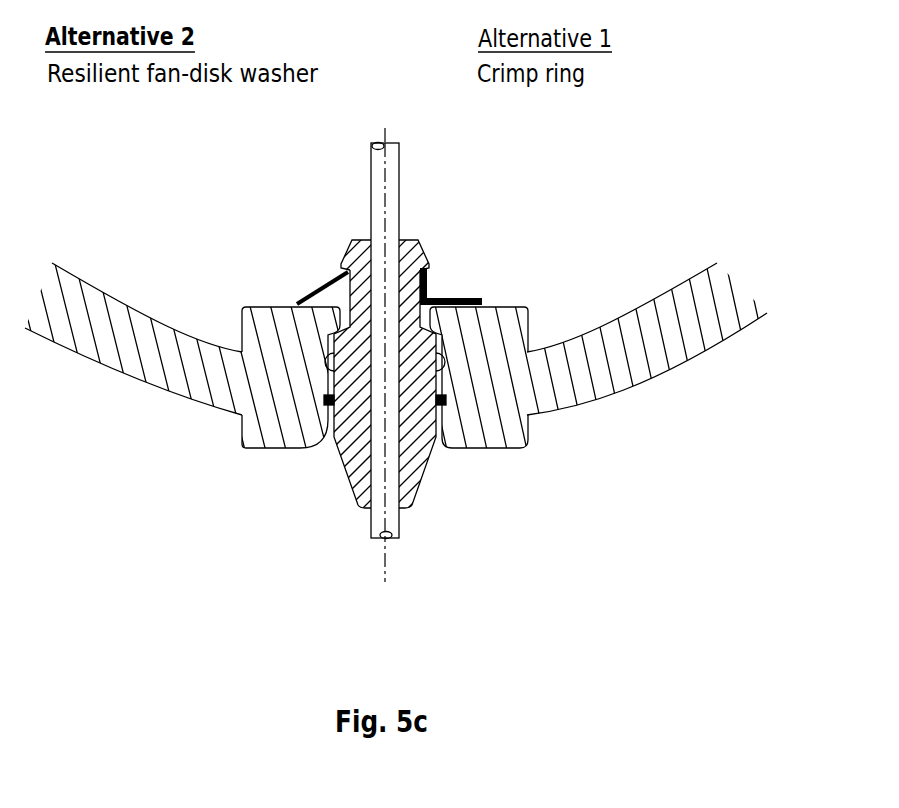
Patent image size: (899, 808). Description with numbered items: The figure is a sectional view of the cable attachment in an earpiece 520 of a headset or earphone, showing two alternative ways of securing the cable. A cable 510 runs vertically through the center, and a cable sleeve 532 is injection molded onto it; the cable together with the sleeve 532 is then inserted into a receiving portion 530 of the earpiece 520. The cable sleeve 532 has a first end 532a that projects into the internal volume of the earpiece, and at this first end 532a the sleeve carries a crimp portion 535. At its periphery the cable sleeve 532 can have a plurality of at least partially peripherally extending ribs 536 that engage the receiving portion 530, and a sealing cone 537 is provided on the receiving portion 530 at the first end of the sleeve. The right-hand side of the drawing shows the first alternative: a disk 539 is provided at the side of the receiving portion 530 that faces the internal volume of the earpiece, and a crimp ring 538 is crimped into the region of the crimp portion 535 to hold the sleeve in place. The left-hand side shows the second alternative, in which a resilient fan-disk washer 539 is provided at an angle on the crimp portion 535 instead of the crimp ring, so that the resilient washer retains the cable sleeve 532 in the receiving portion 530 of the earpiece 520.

The cable 510 is at (387, 543).
The earpiece 520 is at (653, 357).
The receiving portion 530 is at (508, 424).
The cable sleeve 532 is at (412, 446).
The first end of the cable sleeve 532a is at (420, 242).
The crimp portion 535 is at (343, 277).
The ribs 536 is at (323, 400).
The sealing cone 537 is at (243, 340).
The crimp ring 538 is at (428, 279).
The disk / resilient fan-disk washer 539 is at (310, 293).